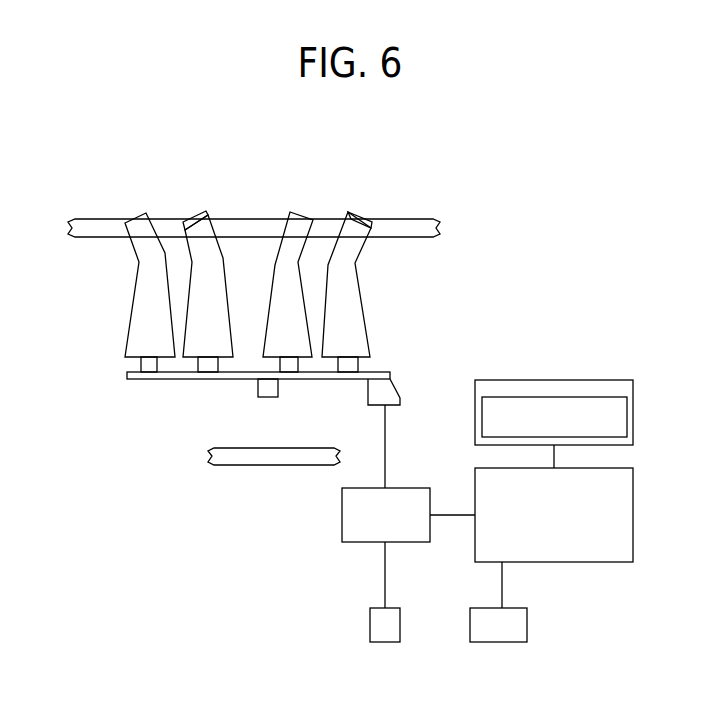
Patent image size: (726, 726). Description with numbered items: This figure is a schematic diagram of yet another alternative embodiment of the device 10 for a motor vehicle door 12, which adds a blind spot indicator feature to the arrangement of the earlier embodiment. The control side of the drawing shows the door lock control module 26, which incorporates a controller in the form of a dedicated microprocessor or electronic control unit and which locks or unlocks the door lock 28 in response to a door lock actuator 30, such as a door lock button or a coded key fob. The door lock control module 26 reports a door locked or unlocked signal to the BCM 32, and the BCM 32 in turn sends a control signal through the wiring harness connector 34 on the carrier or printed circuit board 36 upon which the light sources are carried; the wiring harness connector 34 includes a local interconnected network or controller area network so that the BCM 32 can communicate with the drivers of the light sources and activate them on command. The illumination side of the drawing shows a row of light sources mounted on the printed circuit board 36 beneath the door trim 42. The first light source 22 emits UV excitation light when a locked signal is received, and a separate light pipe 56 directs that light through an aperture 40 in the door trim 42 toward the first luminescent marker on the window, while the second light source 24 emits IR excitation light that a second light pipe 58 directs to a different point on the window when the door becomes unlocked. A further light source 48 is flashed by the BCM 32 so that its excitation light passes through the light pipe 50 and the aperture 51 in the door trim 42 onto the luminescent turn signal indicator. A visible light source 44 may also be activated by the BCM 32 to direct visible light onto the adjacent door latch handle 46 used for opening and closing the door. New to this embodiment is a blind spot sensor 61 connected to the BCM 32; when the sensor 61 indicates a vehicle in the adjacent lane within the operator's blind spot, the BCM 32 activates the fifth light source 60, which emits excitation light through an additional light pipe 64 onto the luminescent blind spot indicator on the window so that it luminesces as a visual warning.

The device 10 is at (505, 215).
The motor vehicle door 12 is at (568, 380).
The first light source 22 is at (282, 365).
The second light source 24 is at (352, 365).
The door lock control module 26 is at (577, 562).
The door lock 28 is at (627, 418).
The door lock actuator 30 is at (510, 642).
The BCM 32 is at (367, 542).
The wiring harness connector 34 is at (392, 393).
The printed circuit board 36 is at (315, 379).
The aperture 40 is at (362, 215).
The door trim 42 is at (97, 223).
The visible light source 44 is at (268, 393).
The door latch handle 46 is at (248, 465).
The light source 48 is at (207, 364).
The light pipe 50 is at (205, 292).
The aperture 51 is at (210, 214).
The light pipe 56 is at (275, 266).
The second light pipe 58 is at (353, 307).
The fifth light source 60 is at (146, 364).
The blind spot sensor 61 is at (380, 642).
The light pipe 64 is at (143, 328).